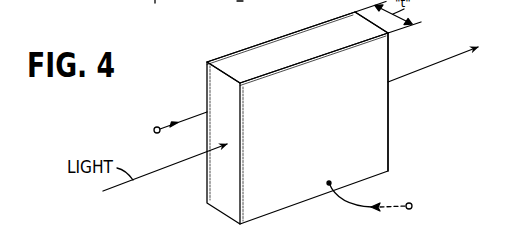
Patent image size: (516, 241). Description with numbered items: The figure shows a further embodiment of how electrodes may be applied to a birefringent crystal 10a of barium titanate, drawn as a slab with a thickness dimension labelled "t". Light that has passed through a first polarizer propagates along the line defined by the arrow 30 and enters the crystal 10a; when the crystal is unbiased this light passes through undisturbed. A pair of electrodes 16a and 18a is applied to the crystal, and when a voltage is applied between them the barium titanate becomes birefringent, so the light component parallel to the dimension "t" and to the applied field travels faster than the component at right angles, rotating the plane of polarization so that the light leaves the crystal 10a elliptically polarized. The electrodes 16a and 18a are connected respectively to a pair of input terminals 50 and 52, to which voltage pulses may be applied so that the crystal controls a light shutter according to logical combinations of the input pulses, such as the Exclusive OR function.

The crystal 10a is at (230, 63).
The electrode 18a is at (240, 51).
The electrode 16a is at (378, 130).
The arrow 30 is at (187, 160).
The terminal 52 is at (154, 130).
The terminal 50 is at (412, 206).